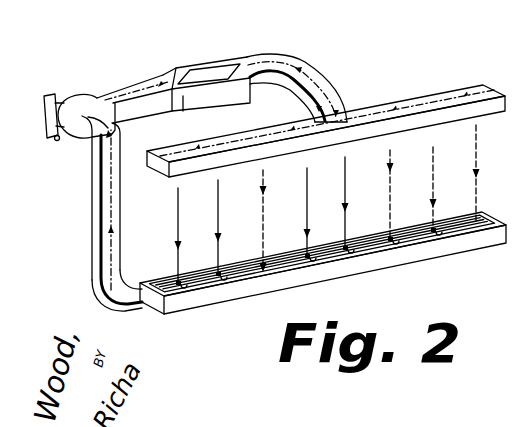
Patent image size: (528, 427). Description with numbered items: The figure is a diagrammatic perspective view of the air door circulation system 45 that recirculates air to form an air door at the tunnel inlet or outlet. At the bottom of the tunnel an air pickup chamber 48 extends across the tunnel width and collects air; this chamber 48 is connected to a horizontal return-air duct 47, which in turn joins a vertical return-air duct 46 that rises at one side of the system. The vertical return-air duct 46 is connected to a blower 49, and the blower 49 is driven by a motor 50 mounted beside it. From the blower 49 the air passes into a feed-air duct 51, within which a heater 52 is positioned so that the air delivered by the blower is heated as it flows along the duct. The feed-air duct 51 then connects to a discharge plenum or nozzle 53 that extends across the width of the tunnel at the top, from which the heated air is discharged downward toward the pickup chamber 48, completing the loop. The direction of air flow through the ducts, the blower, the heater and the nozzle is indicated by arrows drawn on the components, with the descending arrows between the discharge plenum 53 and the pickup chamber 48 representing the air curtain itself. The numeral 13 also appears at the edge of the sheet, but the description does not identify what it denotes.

The housing 13 is at (522, 22).
The air door circulation system 45 is at (432, 281).
The vertical return-air duct 46 is at (92, 232).
The horizontal return-air duct 47 is at (248, 268).
The air pickup chamber 48 is at (258, 286).
The blower 49 is at (78, 105).
The motor 50 is at (55, 140).
The feed-air duct 51 is at (258, 56).
The heater 52 is at (205, 77).
The discharge plenum or nozzle 53 is at (485, 114).